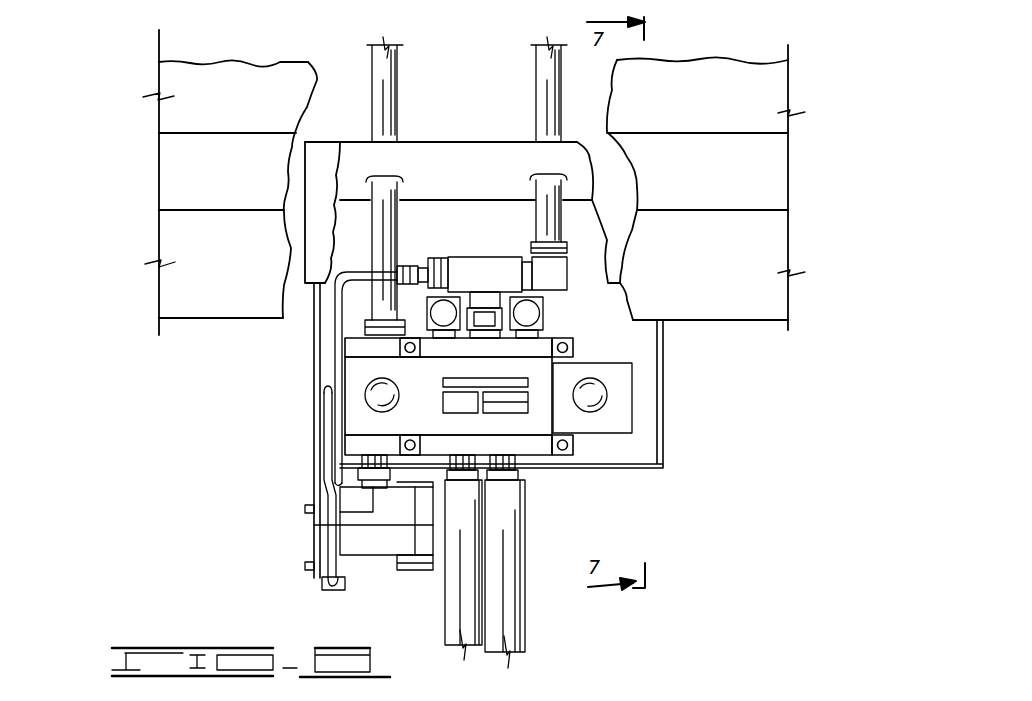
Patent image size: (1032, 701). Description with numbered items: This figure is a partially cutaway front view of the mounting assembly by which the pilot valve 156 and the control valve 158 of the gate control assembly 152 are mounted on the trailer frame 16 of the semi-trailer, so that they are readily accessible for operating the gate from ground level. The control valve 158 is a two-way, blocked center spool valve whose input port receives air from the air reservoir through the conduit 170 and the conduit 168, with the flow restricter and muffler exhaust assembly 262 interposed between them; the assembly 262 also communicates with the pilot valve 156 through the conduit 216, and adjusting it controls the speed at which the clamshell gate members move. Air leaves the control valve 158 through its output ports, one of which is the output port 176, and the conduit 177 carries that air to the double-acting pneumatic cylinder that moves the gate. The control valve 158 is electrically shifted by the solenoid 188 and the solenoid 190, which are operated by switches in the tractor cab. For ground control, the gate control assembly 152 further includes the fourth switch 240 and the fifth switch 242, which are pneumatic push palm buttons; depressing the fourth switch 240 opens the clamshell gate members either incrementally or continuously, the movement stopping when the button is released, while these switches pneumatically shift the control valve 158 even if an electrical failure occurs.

The trailer frame 16 is at (441, 152).
The conduit 170 is at (535, 80).
The flow restricter and muffler exhaust assembly 262 is at (480, 265).
The conduit 168 is at (488, 292).
The conduit 216 is at (337, 317).
The control valve 158 is at (534, 370).
The solenoid 190 is at (355, 407).
The fifth switch 242 is at (365, 411).
The solenoid 188 is at (622, 398).
The fourth switch 240 is at (598, 403).
The gate control assembly 152 is at (271, 492).
The pilot valve 156 is at (361, 574).
The output port 176 is at (448, 583).
The conduit 177 is at (512, 535).